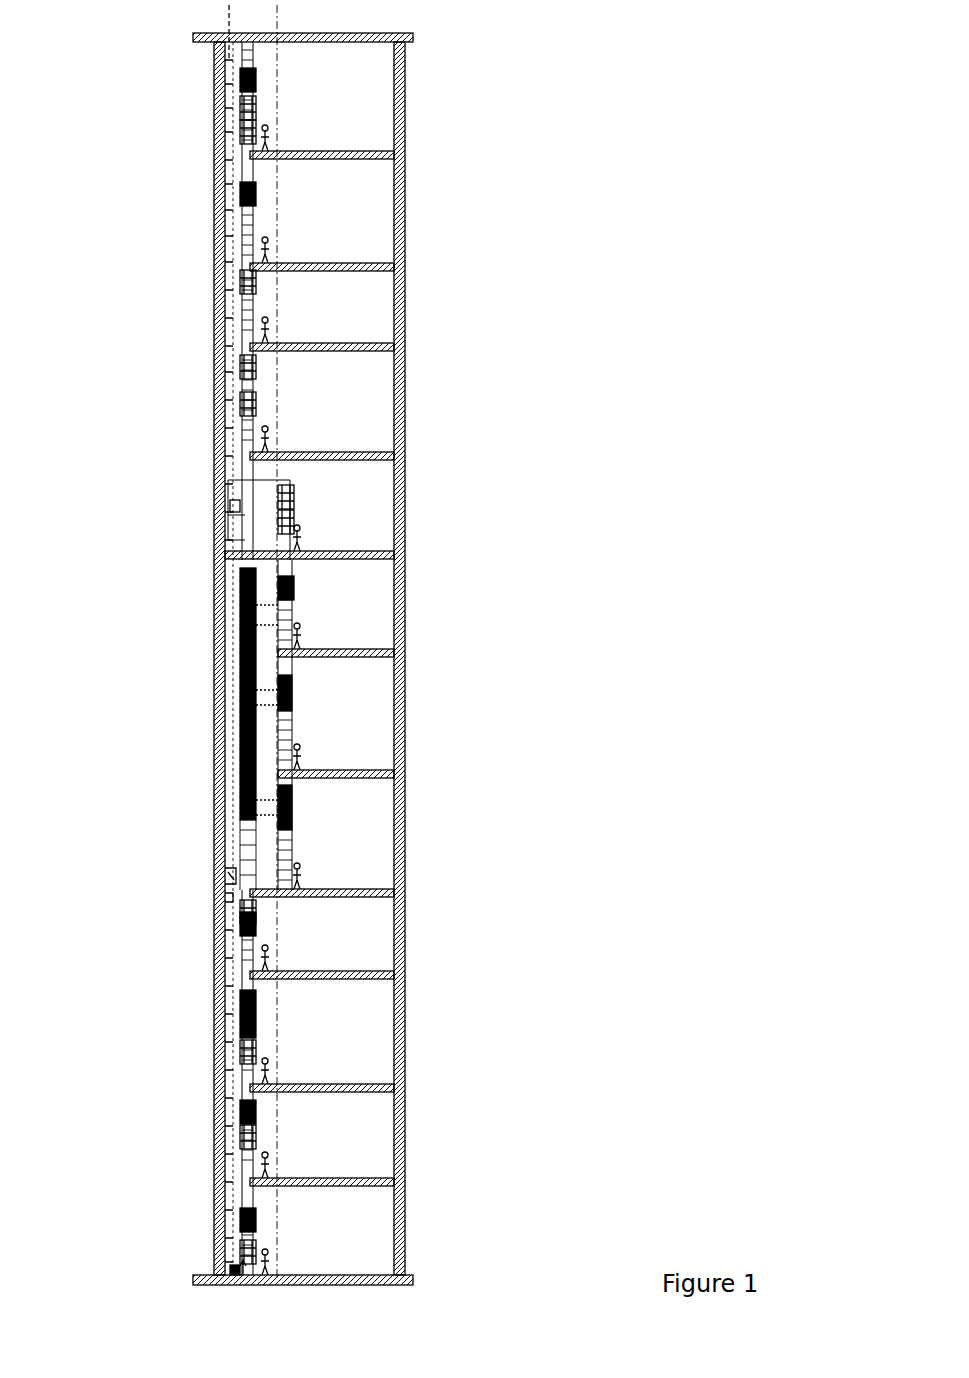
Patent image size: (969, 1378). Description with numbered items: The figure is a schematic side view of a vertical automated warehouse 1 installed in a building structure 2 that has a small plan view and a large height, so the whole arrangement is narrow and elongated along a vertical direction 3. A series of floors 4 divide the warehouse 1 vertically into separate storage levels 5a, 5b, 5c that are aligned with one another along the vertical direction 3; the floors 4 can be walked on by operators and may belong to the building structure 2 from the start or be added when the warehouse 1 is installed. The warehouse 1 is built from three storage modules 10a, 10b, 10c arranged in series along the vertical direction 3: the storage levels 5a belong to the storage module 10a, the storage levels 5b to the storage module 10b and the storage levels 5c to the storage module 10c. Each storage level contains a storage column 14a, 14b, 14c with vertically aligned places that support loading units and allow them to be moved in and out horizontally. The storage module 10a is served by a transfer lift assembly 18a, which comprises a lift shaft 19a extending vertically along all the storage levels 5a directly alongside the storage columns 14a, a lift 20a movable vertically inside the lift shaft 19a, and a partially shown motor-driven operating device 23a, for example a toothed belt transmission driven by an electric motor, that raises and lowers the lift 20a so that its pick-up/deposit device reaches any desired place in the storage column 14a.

The vertical automated warehouse 1 is at (618, 90).
The building structure 2 is at (405, 88).
The vertical direction 3 is at (228, 5).
The floors 4 is at (405, 160).
The storage levels 5a is at (374, 915).
The storage levels 5b is at (358, 522).
The storage levels 5c is at (373, 121).
The storage module 10a is at (199, 1224).
The storage module 10b is at (204, 815).
The storage module 10c is at (204, 302).
The storage column 14a is at (258, 921).
The storage column 14b is at (293, 808).
The storage column 14c is at (262, 186).
The transfer lift assembly 18a is at (211, 896).
The lift shaft 19a is at (243, 1276).
The lift 20a is at (212, 878).
The motor-driven operating device 23a is at (236, 1288).